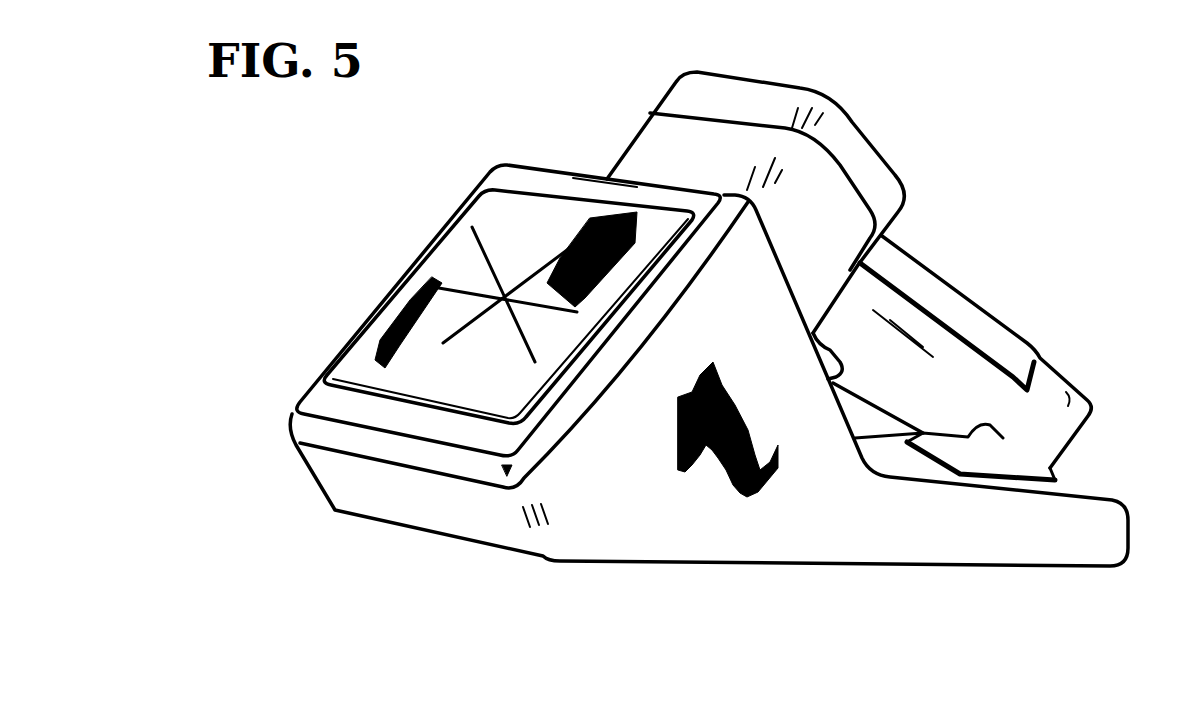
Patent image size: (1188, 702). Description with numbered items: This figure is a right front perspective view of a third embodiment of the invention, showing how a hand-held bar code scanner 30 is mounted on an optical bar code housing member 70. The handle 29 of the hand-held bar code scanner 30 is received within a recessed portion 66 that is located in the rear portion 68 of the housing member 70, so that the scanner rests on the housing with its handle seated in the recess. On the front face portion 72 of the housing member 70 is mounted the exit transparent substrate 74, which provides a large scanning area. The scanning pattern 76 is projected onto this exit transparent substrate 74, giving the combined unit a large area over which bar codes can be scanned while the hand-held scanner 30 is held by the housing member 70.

The handle 29 is at (1027, 345).
The hand-held bar code scanner 30 is at (860, 128).
The recessed portion 66 is at (1010, 470).
The rear portion 68 is at (946, 558).
The housing member 70 is at (496, 168).
The front face portion 72 is at (310, 405).
The exit transparent substrate 74 is at (338, 357).
The scanning pattern 76 is at (480, 255).